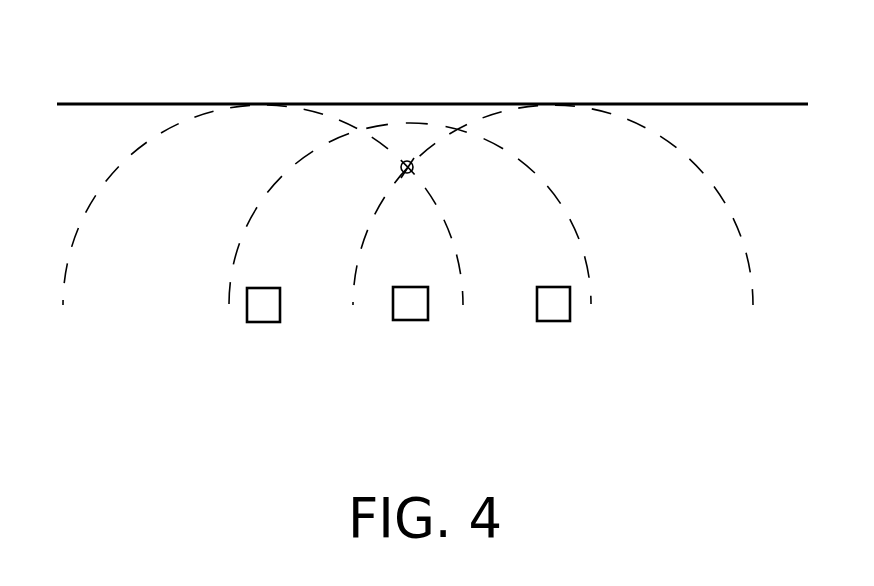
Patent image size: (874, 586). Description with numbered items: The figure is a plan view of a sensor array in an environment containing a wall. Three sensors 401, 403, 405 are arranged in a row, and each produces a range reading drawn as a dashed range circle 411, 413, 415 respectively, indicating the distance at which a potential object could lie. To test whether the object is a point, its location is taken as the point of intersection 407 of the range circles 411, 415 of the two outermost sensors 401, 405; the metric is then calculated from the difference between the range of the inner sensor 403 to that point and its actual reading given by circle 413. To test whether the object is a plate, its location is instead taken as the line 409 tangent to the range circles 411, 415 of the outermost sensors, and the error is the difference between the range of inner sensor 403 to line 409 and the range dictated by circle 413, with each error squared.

The sensor 401 is at (262, 322).
The sensor 403 is at (410, 320).
The sensor 405 is at (553, 321).
The point of intersection 407 is at (413, 170).
The line 409 is at (107, 104).
The range circle 411 is at (78, 232).
The range circle 413 is at (568, 222).
The range circle 415 is at (732, 218).